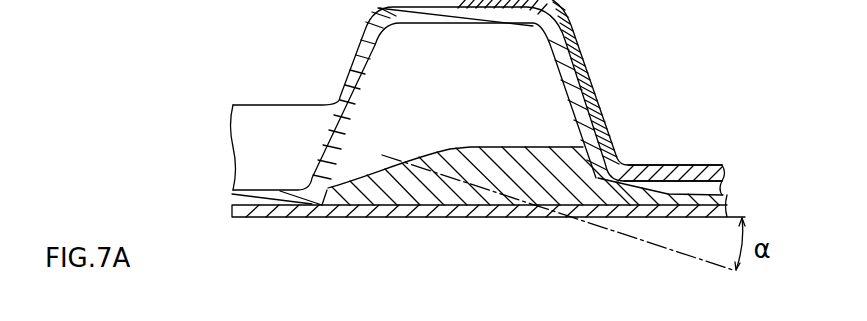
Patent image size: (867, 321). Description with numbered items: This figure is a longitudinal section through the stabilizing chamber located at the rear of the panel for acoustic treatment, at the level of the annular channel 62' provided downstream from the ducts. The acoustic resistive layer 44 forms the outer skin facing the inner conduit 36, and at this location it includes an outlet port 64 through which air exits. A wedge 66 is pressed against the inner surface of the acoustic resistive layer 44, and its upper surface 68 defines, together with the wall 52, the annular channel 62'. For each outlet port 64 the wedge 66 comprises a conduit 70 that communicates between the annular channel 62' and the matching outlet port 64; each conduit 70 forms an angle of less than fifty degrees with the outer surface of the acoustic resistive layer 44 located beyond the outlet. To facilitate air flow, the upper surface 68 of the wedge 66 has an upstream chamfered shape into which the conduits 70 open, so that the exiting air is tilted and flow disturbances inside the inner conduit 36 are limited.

The wall 52 is at (594, 84).
The annular channel 62' is at (540, 86).
The wedge 66 is at (628, 160).
The upper surface 68 is at (450, 147).
The conduit 70 is at (457, 204).
The outlet port 64 is at (543, 216).
The acoustic resistive layer 44 is at (347, 213).
The inner conduit 36 is at (557, 219).